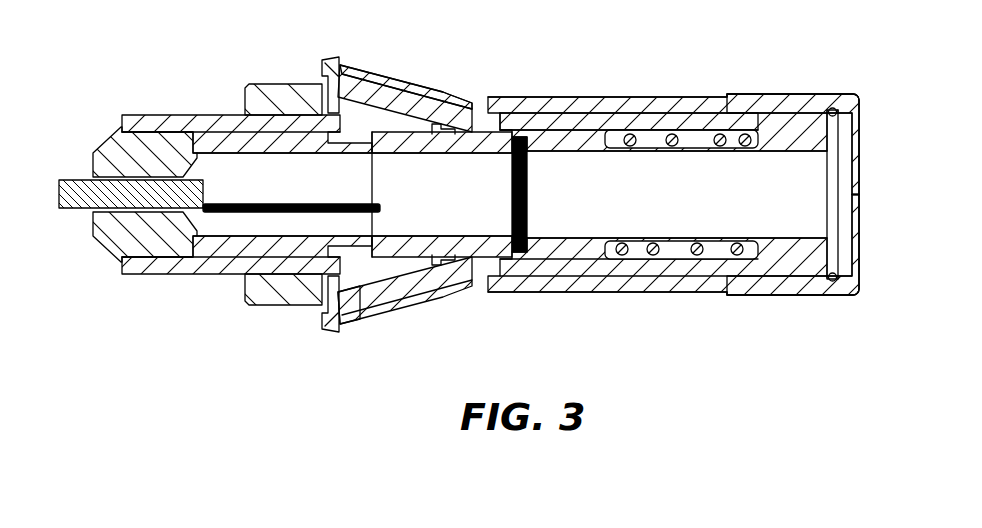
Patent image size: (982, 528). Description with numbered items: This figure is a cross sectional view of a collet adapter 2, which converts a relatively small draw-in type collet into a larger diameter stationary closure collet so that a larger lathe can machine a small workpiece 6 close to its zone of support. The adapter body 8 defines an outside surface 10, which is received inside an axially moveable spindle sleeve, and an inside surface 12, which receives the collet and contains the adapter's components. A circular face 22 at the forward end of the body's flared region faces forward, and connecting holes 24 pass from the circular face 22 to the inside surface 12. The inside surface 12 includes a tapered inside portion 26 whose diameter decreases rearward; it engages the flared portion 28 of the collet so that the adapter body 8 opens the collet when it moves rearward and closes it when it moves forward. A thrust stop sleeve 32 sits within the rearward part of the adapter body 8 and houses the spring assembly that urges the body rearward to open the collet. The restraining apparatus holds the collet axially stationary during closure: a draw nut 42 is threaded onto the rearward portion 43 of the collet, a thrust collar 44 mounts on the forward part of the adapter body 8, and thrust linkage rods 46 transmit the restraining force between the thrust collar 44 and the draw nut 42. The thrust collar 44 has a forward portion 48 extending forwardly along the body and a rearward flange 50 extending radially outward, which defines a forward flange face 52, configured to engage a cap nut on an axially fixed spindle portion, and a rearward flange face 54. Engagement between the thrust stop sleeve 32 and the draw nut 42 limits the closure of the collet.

The collet adapter 2 is at (744, 58).
The workpiece 6 is at (68, 210).
The adapter body 8 is at (733, 292).
The outside surface 10 is at (648, 98).
The inside surface 12 is at (742, 113).
The circular face 22 is at (343, 63).
The connecting holes 24 is at (413, 92).
The tapered inside portion 26 is at (130, 130).
The flared portion of collet 28 is at (135, 272).
The thrust stop sleeve 32 is at (793, 267).
The draw nut 42 is at (487, 117).
The rearward portion of collet 43 is at (540, 122).
The thrust collar 44 is at (262, 298).
The thrust linkage rods 46 is at (408, 288).
The forward portion of thrust collar 48 is at (263, 92).
The rearward flange 50 is at (333, 58).
The forward flange face 52 is at (317, 313).
The rearward flange face 54 is at (343, 322).